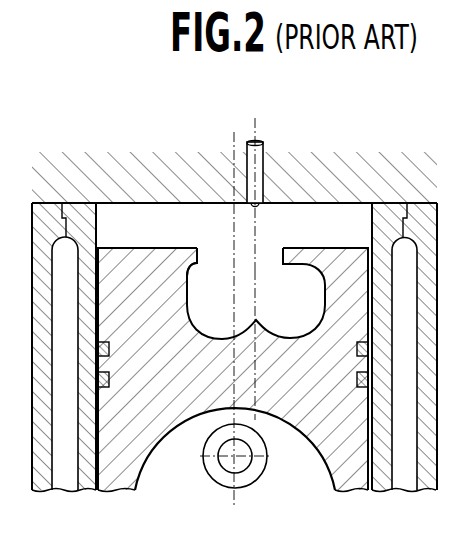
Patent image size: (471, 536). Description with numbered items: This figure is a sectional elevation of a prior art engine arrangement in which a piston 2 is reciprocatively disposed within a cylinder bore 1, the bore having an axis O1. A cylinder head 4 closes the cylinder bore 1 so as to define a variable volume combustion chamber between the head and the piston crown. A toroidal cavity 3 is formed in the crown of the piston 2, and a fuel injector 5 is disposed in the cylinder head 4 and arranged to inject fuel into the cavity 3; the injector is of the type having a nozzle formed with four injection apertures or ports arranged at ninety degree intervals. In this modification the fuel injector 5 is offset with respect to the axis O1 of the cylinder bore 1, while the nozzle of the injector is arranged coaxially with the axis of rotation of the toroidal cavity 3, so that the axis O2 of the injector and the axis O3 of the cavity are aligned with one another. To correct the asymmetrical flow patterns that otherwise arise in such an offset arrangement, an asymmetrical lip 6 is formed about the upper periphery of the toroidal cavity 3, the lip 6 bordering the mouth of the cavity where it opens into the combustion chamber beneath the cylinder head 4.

The cylinder bore 1 is at (371, 207).
The piston 2 is at (306, 436).
The toroidal cavity 3 is at (303, 313).
The cylinder head 4 is at (141, 172).
The fuel injector 5 is at (262, 153).
The lip 6 is at (199, 259).
The cylinder bore axis O1 is at (232, 228).
The injector axis O2 is at (240, 136).
The cavity axis O3 is at (247, 260).